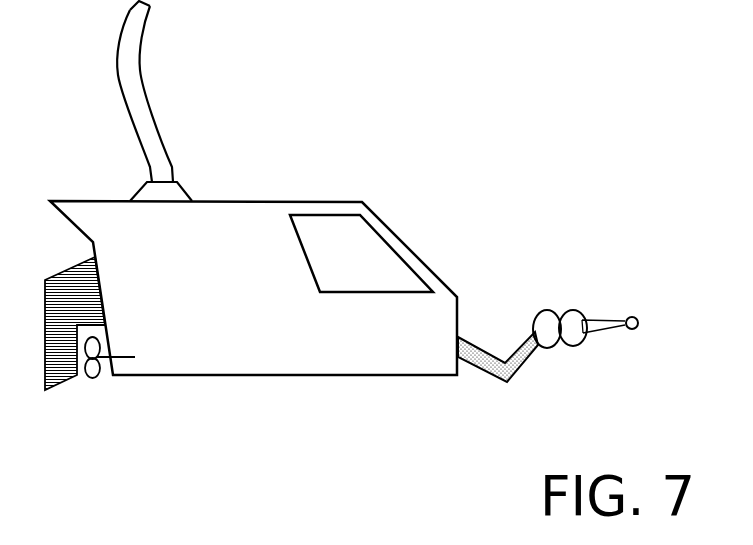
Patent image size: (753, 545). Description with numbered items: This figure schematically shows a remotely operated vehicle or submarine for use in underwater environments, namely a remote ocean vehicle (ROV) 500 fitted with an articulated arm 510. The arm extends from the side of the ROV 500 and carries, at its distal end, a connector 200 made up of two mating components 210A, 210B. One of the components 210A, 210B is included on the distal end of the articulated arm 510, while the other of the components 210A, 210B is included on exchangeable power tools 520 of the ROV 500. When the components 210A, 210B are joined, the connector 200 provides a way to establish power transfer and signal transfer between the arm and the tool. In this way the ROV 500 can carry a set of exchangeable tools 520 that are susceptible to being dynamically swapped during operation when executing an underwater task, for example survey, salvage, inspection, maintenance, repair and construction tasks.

The remote ocean vehicle (ROV) 500 is at (222, 298).
The articulated arm 510 is at (487, 362).
The connector 200 is at (575, 322).
The first connector component 210A is at (548, 327).
The second connector component 210B is at (572, 330).
The exchangeable power tools 520 is at (590, 328).